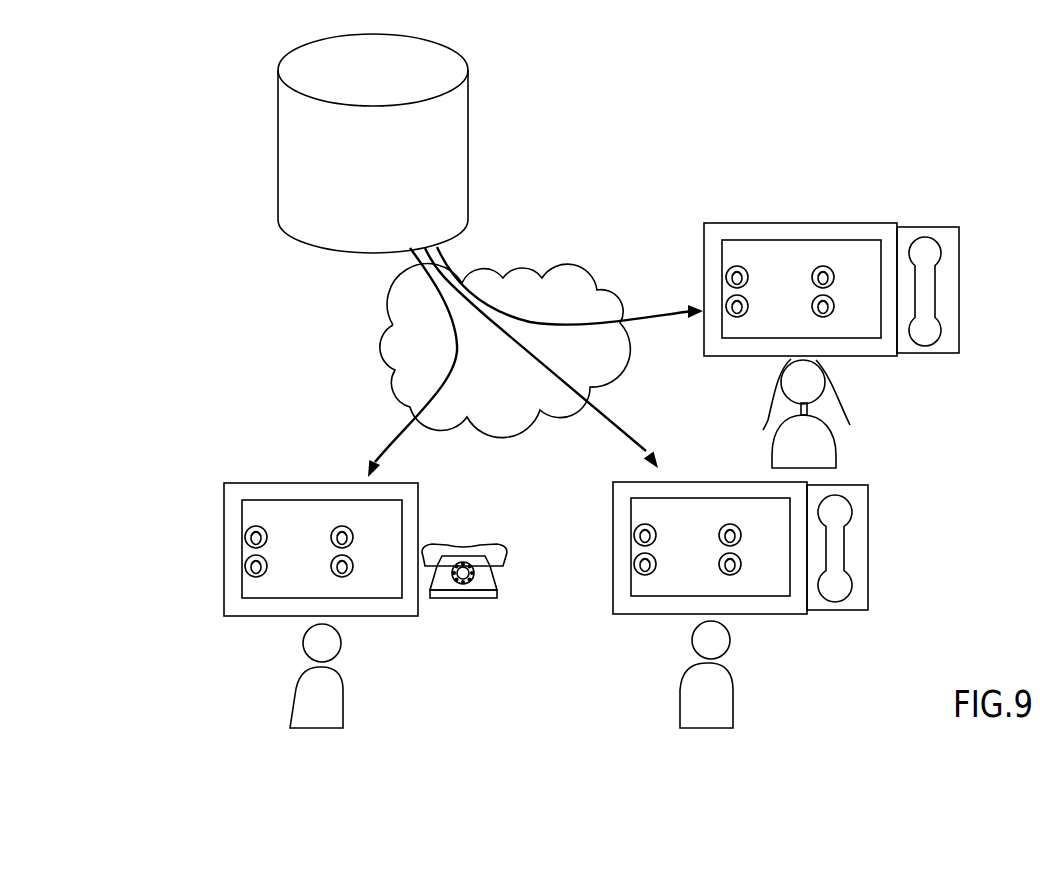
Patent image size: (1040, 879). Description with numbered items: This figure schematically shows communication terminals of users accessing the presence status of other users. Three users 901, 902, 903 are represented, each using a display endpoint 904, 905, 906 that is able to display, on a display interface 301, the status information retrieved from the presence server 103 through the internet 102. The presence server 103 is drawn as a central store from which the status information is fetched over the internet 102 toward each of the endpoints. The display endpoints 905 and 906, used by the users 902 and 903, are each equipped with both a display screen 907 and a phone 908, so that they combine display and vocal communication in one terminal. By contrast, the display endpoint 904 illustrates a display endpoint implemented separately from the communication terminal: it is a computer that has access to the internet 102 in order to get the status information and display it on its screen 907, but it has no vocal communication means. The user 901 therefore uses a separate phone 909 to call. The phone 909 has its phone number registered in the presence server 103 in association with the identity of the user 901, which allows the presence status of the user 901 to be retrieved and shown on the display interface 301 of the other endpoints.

The internet 102 is at (370, 350).
The presence server 103 is at (355, 148).
The display interface 301 is at (292, 518).
The user 901 is at (343, 695).
The user 902 is at (735, 698).
The user 903 is at (817, 447).
The display endpoint 904 is at (236, 632).
The display endpoint 905 is at (600, 577).
The display endpoint 906 is at (877, 215).
The display screen 907 is at (224, 510).
The phone 908 is at (830, 552).
The phone 909 is at (463, 600).